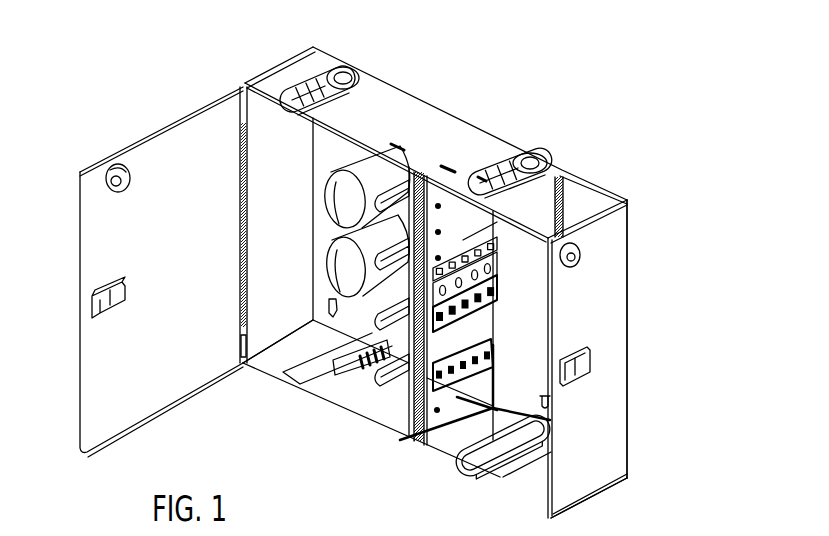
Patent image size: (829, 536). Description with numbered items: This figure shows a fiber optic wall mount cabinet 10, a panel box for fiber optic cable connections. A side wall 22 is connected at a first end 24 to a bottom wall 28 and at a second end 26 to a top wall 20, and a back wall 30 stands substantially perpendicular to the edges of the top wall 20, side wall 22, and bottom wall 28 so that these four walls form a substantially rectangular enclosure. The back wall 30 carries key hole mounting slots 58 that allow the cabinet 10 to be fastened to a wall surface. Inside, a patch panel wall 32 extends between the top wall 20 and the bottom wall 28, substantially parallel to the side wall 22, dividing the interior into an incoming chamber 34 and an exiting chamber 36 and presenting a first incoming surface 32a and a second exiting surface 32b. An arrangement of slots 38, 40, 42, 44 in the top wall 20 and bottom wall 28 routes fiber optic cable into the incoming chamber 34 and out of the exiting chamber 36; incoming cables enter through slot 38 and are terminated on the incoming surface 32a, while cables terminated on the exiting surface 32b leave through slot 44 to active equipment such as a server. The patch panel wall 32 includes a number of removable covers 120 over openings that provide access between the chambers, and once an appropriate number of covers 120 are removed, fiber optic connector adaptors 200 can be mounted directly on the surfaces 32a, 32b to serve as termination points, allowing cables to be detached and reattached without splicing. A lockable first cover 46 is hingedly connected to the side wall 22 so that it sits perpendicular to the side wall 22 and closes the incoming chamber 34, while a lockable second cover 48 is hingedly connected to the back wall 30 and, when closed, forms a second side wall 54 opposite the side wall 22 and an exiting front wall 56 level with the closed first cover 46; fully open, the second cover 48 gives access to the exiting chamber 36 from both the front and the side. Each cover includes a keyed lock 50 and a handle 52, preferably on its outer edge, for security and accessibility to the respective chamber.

The fiber optic wall mount cabinet 10 is at (433, 58).
The top wall 20 is at (427, 127).
The side wall 22 is at (266, 322).
The first end 24 is at (290, 338).
The second end 26 is at (281, 65).
The bottom wall 28 is at (357, 395).
The back wall 30 is at (327, 143).
The patch panel wall 32 is at (407, 440).
The first incoming surface 32a is at (393, 394).
The second exiting surface 32b is at (435, 432).
The incoming chamber 34 is at (327, 238).
The exiting chamber 36 is at (537, 317).
The slot 38 is at (312, 372).
The slot 40 is at (353, 66).
The slot 42 is at (524, 157).
The slot 44 is at (505, 448).
The first cover 46 is at (128, 368).
The second cover 48 is at (628, 197).
The keyed lock 50 is at (108, 196).
The handle 52 is at (92, 316).
The second side wall 54 is at (590, 183).
The exiting front wall 56 is at (612, 415).
The key hole mounting slots 58 is at (325, 310).
The removable covers 120 is at (452, 222).
The fiber optic connector adaptors 200 is at (492, 298).